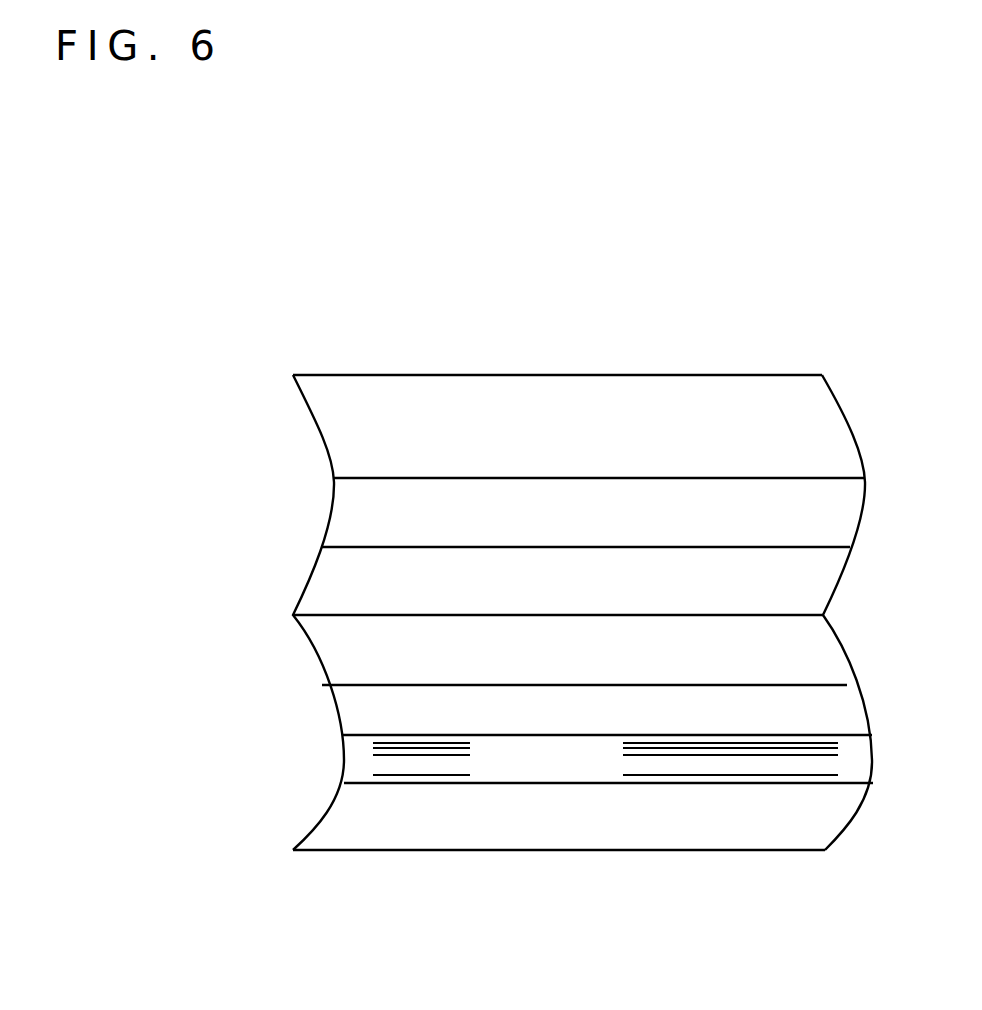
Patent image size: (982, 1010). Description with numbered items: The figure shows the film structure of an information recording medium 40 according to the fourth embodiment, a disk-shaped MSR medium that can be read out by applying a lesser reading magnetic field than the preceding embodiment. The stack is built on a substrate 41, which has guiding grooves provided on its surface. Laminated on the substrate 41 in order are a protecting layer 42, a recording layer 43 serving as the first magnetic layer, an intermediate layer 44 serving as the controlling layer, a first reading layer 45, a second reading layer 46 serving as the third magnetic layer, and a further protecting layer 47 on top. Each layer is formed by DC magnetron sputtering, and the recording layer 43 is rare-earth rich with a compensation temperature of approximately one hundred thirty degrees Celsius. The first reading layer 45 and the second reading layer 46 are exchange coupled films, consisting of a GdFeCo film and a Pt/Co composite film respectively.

The information recording medium 40 is at (529, 559).
The substrate 41 is at (355, 449).
The protecting layer 42 is at (352, 526).
The recording layer 43 is at (318, 588).
The intermediate layer 44 is at (333, 653).
The first reading layer 45 is at (347, 703).
The second reading layer 46 is at (321, 735).
The protecting layer 47 is at (340, 829).